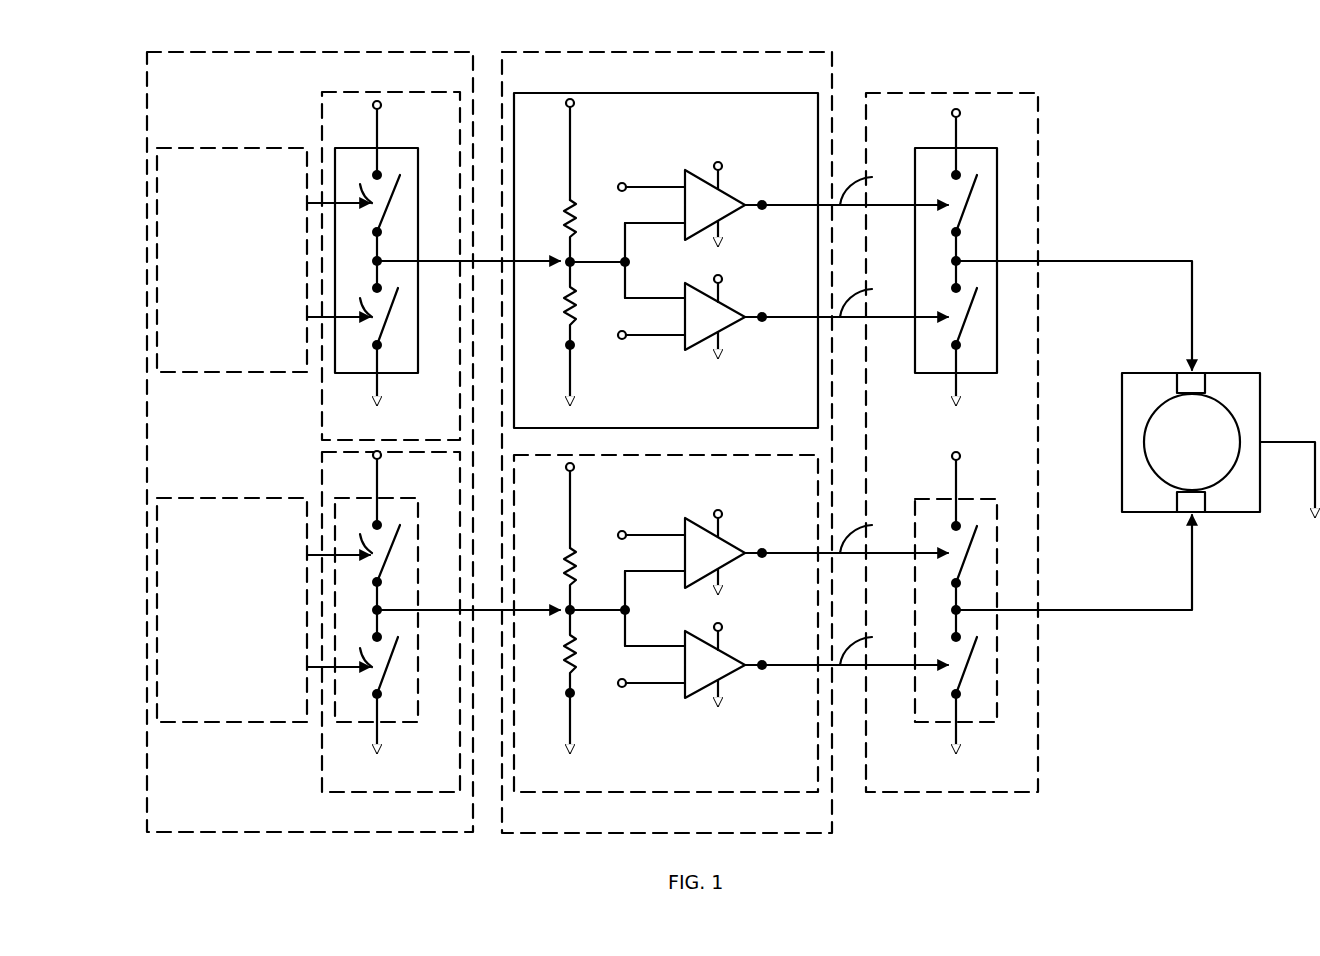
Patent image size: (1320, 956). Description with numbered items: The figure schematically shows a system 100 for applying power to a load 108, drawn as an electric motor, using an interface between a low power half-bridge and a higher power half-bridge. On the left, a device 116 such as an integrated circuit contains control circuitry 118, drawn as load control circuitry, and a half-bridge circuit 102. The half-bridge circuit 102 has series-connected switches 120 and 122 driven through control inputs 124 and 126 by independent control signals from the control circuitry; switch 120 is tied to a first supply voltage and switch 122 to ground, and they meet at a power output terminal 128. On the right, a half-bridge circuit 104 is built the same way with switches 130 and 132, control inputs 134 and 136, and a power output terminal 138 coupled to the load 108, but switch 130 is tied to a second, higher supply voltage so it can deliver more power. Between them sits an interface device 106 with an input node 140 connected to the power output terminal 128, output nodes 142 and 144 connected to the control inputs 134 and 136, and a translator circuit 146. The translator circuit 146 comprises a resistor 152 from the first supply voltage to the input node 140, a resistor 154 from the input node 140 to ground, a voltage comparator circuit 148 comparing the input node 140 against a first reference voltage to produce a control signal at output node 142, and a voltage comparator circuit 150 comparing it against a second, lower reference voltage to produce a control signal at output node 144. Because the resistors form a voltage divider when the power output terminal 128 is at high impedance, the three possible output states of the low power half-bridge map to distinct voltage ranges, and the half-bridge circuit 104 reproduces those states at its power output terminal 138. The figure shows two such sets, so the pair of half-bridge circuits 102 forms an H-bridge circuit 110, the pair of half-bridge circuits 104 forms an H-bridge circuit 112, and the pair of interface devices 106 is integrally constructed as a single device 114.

The system 100 is at (1156, 134).
The half-bridge circuit 102 is at (386, 148).
The half-bridge circuit 104 is at (972, 148).
The interface device 106 is at (744, 93).
The load 108 is at (1240, 373).
The H-bridge circuit 110 is at (403, 92).
The H-bridge circuit 112 is at (1000, 93).
The single device 114 is at (739, 52).
The device 116 is at (380, 52).
The control circuitry 118 is at (222, 148).
The switch 120 is at (406, 203).
The switch 122 is at (447, 328).
The control input 124 is at (390, 208).
The control input 126 is at (388, 322).
The power output terminal 128 is at (383, 264).
The switch 130 is at (983, 197).
The switch 132 is at (983, 325).
The control input 134 is at (932, 206).
The control input 136 is at (932, 318).
The power output terminal 138 is at (961, 264).
The input node 140 is at (573, 259).
The output node 142 is at (765, 203).
The output node 144 is at (765, 315).
The translator circuit 146 is at (678, 146).
The voltage comparator circuit 148 is at (722, 220).
The voltage comparator circuit 150 is at (722, 332).
The resistor 152 is at (566, 221).
The resistor 154 is at (568, 304).